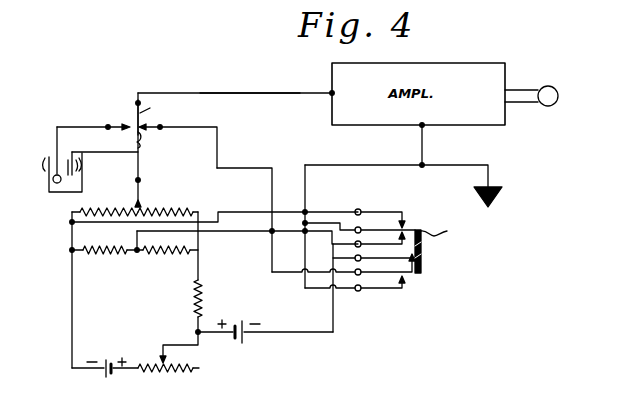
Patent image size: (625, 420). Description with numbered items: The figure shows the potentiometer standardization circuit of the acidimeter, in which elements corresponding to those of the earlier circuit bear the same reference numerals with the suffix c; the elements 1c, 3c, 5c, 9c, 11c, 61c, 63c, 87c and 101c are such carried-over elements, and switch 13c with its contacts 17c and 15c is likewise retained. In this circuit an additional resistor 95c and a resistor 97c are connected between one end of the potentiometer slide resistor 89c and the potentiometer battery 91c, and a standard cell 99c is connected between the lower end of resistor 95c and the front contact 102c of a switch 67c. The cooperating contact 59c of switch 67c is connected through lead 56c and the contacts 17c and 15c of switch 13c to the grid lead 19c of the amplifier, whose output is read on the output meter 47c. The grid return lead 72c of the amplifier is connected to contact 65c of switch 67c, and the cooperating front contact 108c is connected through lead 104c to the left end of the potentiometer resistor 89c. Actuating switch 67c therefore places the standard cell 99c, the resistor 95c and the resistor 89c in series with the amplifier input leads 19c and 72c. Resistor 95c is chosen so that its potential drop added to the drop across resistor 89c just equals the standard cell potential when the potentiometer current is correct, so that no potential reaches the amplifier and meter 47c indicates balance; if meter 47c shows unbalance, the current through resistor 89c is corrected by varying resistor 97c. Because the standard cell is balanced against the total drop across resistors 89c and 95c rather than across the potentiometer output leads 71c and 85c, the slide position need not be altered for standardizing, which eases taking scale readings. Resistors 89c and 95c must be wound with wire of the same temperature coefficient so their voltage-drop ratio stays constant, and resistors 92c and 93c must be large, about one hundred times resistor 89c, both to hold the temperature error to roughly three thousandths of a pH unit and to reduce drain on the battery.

The detector housing 1c is at (48, 189).
The thermocouple 3c is at (56, 157).
The heater 5c is at (75, 168).
The conductor 9c is at (81, 120).
The relay contact arm 11c is at (114, 133).
The switch 13c is at (123, 109).
The contact 15c is at (158, 113).
The contact 17c is at (152, 129).
The grid lead 19c is at (262, 89).
The output meter 47c is at (555, 80).
The lead 56c is at (247, 161).
The cooperating contact 59c is at (343, 264).
The contact 61c is at (355, 282).
The contact 63c is at (380, 238).
The contact 65c is at (360, 224).
The switch 67c is at (420, 274).
The potentiometer output lead 71c is at (231, 233).
The grid return lead 72c is at (424, 147).
The potentiometer output lead 85c is at (141, 168).
The potentiometer section 87c is at (136, 200).
The potentiometer slide resistor 89c is at (168, 201).
The potentiometer battery 91c is at (107, 377).
The resistor 92c is at (97, 255).
The resistor 93c is at (164, 255).
The additional resistor 95c is at (201, 292).
The resistor 97c is at (178, 373).
The standard cell 99c is at (265, 342).
The conductor 101c is at (335, 326).
The front contact 102c is at (374, 252).
The lead 104c is at (246, 211).
The front contact 108c is at (380, 205).